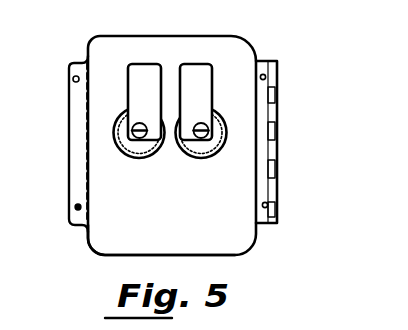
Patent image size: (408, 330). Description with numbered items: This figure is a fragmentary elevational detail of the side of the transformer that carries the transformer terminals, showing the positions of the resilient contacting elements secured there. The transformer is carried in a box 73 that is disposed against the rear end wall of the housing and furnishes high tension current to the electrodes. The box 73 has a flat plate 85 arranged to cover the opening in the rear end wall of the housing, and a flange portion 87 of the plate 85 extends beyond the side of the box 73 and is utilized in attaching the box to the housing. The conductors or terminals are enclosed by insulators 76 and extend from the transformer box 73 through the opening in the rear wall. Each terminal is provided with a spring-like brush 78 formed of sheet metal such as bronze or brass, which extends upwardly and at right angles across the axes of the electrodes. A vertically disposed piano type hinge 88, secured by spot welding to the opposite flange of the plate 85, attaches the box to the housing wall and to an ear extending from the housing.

The transformer box 73 is at (90, 248).
The insulator 76 is at (139, 158).
The spring-like brush 78 is at (139, 71).
The flat plate 85 is at (100, 52).
The flange portion 87 is at (77, 135).
The piano type hinge 88 is at (276, 115).